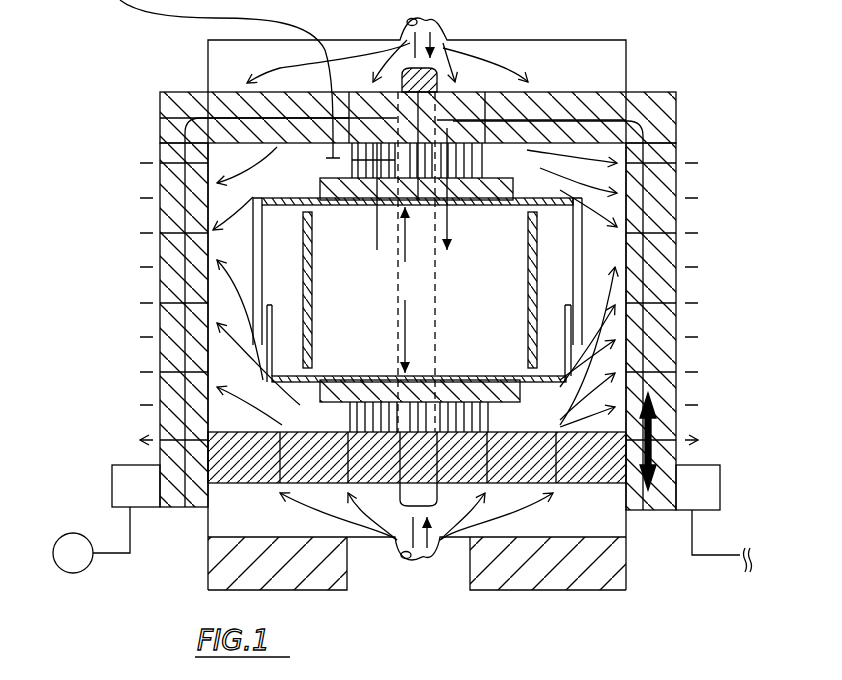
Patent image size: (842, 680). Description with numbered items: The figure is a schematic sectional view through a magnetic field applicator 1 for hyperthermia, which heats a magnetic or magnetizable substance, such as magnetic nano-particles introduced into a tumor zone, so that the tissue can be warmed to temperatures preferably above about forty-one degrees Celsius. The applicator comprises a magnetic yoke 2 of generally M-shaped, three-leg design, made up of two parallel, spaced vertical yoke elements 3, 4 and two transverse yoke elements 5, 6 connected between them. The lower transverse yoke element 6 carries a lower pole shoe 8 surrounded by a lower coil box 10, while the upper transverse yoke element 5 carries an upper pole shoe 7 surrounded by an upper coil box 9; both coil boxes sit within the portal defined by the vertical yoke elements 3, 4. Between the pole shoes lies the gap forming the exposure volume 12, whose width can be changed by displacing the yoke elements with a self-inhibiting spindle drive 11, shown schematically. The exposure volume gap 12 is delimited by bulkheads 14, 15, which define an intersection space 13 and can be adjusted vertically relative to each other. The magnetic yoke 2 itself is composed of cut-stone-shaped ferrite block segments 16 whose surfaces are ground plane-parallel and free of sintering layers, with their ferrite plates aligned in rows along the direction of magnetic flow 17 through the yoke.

The magnetic field applicator 1 is at (737, 97).
The magnetic yoke 2 is at (660, 92).
The vertical yoke element 3 is at (163, 172).
The vertical yoke element 4 is at (668, 183).
The upper transverse yoke element 5 is at (226, 103).
The lower transverse yoke element 6 is at (587, 483).
The upper pole shoe 7 is at (450, 176).
The lower pole shoe 8 is at (452, 420).
The upper coil box 9 is at (483, 188).
The lower coil box 10 is at (481, 393).
The self-inhibiting spindle drive 11 is at (118, 553).
The exposure volume 12 is at (404, 290).
The intersection space 13 is at (348, 298).
The bulkhead 14 is at (310, 333).
The bulkhead 15 is at (640, 344).
The ferrite block segment 16 is at (668, 355).
The direction of magnetic flow 17 is at (162, 107).